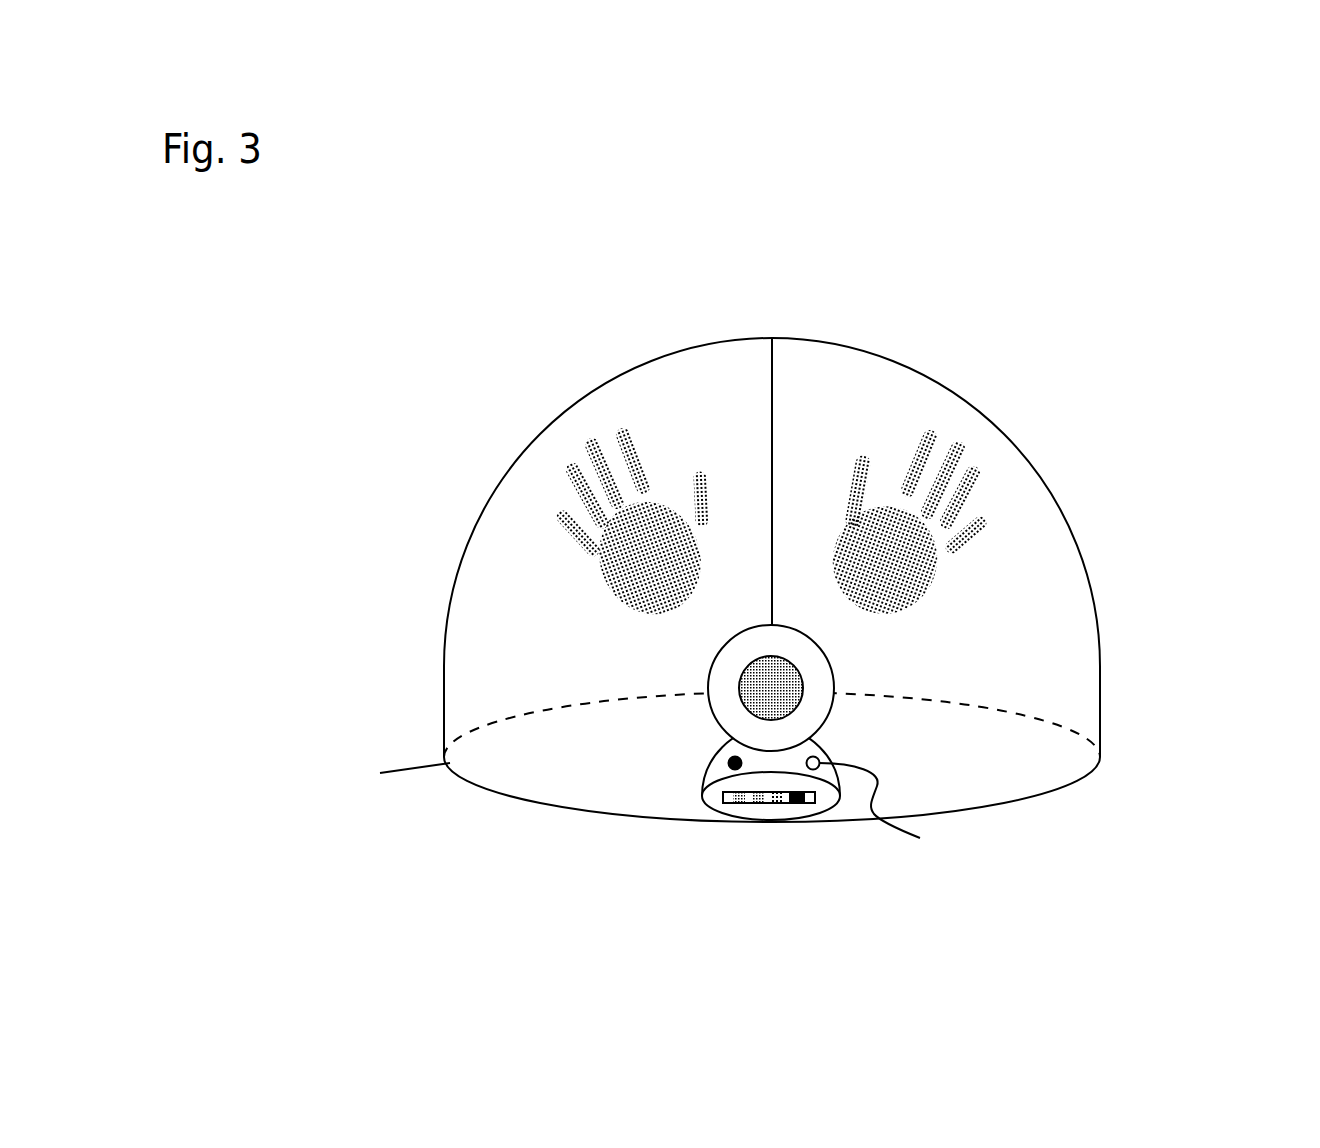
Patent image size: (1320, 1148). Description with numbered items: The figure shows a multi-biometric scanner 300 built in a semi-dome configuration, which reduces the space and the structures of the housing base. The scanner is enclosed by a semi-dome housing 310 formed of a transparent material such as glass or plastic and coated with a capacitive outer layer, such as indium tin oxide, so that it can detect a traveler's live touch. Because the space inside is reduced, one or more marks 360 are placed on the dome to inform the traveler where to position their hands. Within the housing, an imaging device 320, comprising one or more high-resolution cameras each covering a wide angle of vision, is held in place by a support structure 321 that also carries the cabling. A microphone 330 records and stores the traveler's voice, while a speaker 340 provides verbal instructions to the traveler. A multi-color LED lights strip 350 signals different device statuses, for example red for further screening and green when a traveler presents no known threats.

The multi-biometric scanner 300 is at (232, 214).
The semi-dome housing 310 is at (552, 427).
The imaging device 320 is at (833, 662).
The support structure 321 is at (732, 820).
The microphone 330 is at (885, 808).
The speaker 340 is at (733, 765).
The multi-color LED lights strip 350 is at (813, 803).
The marks 360 is at (883, 458).